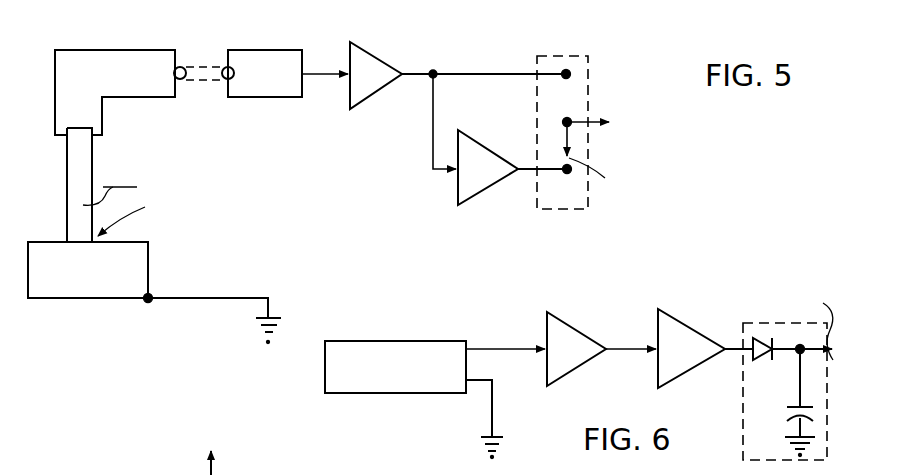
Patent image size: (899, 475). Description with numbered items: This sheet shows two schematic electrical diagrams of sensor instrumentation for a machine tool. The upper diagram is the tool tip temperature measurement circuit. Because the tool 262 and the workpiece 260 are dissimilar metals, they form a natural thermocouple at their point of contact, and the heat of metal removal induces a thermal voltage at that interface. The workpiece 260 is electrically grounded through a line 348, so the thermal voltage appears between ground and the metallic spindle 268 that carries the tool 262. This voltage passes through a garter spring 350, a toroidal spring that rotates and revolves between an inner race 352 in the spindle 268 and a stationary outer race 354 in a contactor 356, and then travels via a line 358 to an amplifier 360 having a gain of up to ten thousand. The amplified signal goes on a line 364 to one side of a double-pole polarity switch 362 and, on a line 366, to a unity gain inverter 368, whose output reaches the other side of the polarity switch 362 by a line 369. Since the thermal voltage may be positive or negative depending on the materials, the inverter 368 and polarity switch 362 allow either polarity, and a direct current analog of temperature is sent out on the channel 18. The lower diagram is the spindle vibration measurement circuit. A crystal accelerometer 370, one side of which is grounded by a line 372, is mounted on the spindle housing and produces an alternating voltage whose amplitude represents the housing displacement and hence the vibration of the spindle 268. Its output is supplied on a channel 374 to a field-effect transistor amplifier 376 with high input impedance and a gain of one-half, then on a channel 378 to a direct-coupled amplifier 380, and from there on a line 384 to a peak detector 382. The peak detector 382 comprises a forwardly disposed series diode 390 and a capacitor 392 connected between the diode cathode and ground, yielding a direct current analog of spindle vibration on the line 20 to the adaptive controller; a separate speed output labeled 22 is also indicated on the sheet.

In FIG. 5, the spindle 268 is at (135, 50).
In FIG. 5, the tool 262 is at (67, 192).
In FIG. 5, the garter spring 350 is at (184, 65).
In FIG. 5, the inner race 352 is at (177, 80).
In FIG. 5, the outer race 354 is at (235, 80).
In FIG. 5, the contactor 356 is at (257, 50).
In FIG. 5, the line 358 is at (326, 57).
In FIG. 5, the amplifier 360 is at (367, 50).
In FIG. 5, the line 364 is at (452, 72).
In FIG. 5, the line 366 is at (433, 133).
In FIG. 5, the unity gain inverter 368 is at (478, 196).
In FIG. 5, the line 369 is at (528, 172).
In FIG. 5, the polarity switch 362 is at (578, 56).
In FIG. 5, the channel 18 is at (600, 118).
In FIG. 5, the workpiece 260 is at (148, 262).
In FIG. 5, the line 348 is at (205, 298).
In FIG. 6, the crystal accelerometer 370 is at (388, 345).
In FIG. 6, the channel 374 is at (480, 348).
In FIG. 6, the line 372 is at (492, 415).
In FIG. 6, the field-effect transistor amplifier 376 is at (552, 315).
In FIG. 6, the channel 378 is at (617, 347).
In FIG. 6, the direct-coupled amplifier 380 is at (668, 312).
In FIG. 6, the line 384 is at (722, 352).
In FIG. 6, the peak detector 382 is at (740, 430).
In FIG. 6, the diode 390 is at (762, 358).
In FIG. 6, the line 20 is at (828, 368).
In FIG. 6, the capacitor 392 is at (785, 410).
In FIG. 6, the speed output 22 is at (217, 472).